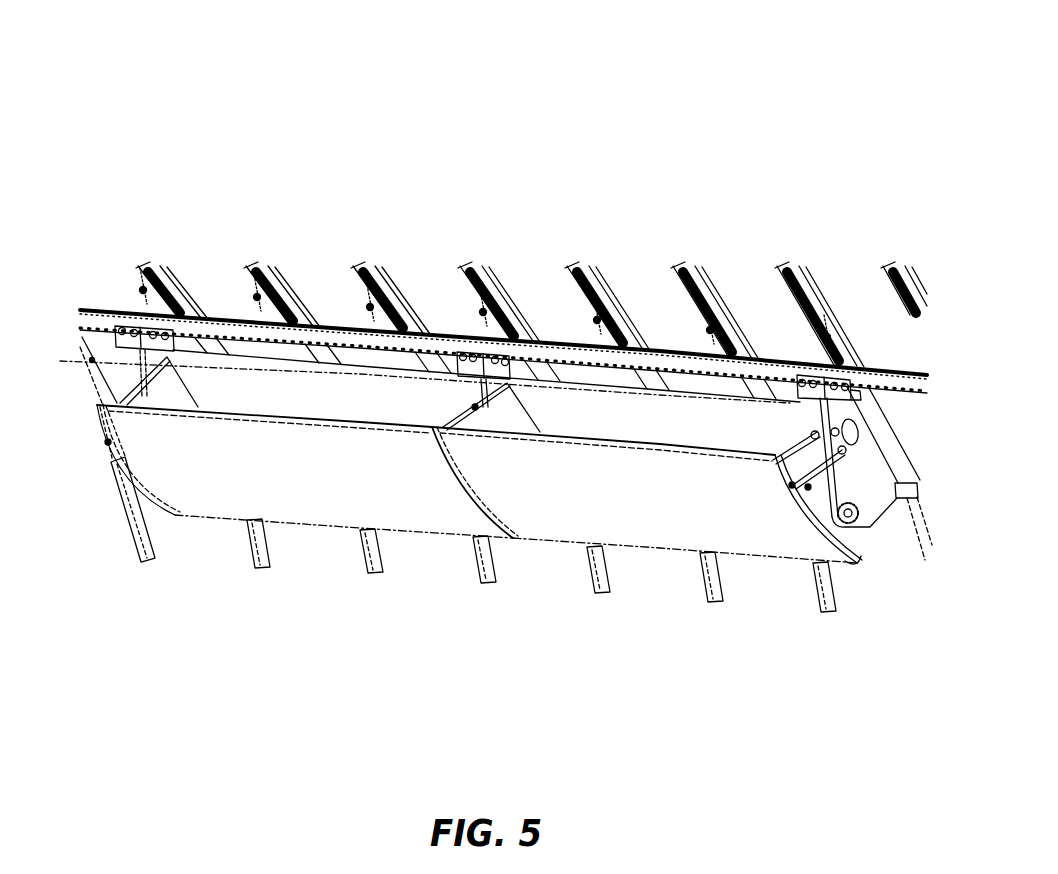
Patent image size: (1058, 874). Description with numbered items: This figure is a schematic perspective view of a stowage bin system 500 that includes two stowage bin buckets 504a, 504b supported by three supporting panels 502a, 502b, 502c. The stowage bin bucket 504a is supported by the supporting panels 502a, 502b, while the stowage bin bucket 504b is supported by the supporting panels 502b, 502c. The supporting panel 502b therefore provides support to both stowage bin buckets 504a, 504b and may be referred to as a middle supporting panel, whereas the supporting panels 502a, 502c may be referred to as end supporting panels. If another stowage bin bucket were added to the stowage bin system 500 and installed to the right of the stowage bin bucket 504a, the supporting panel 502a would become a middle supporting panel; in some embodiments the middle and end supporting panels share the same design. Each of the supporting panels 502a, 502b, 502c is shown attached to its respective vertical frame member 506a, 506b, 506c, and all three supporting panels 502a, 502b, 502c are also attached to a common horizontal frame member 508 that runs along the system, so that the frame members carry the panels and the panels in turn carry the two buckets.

The stowage bin system 500 is at (492, 356).
The supporting panel 502a is at (818, 408).
The supporting panel 502b is at (477, 353).
The supporting panel 502c is at (133, 332).
The stowage bin bucket 504a is at (648, 493).
The stowage bin bucket 504b is at (225, 495).
The vertical frame member 506a is at (811, 270).
The vertical frame member 506b is at (483, 272).
The vertical frame member 506c is at (162, 272).
The horizontal frame member 508 is at (657, 362).